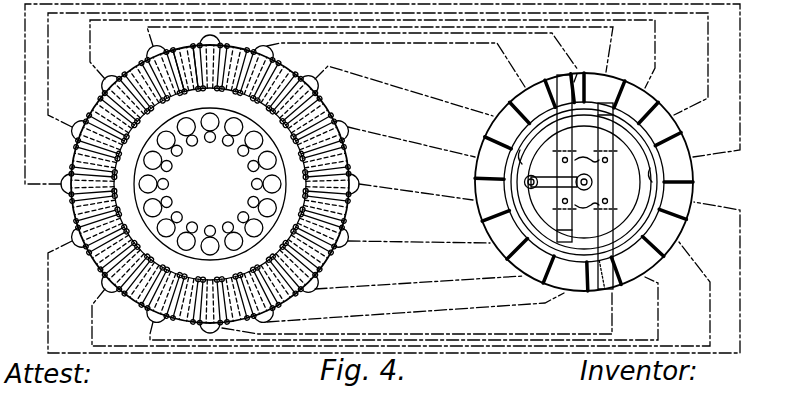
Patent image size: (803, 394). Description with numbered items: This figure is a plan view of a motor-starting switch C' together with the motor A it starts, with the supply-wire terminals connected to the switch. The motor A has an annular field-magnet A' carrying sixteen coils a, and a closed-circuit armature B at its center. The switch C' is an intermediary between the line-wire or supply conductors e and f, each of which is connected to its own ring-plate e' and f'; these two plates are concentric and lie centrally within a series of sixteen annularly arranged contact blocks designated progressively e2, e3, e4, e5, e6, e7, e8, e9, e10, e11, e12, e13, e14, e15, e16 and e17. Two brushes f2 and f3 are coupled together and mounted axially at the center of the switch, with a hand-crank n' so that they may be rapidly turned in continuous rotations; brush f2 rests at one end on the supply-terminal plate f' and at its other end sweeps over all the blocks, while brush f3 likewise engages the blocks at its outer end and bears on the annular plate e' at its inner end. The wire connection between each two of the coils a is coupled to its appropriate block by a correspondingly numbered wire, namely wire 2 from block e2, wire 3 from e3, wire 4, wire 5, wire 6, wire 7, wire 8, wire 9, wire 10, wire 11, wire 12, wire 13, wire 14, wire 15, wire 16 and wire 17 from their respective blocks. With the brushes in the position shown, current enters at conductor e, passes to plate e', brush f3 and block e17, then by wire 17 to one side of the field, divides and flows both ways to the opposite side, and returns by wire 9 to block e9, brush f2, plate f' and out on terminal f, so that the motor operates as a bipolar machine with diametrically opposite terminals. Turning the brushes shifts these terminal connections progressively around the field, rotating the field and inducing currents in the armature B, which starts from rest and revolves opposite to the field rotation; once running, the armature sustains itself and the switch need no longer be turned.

The motor A is at (199, 184).
The field-magnet A' is at (172, 69).
The coils a is at (210, 184).
The armature B is at (210, 184).
The switch C' is at (584, 182).
The supply conductor e is at (641, 182).
The ring-plate e' is at (583, 182).
The contact-block e2 is at (523, 107).
The contact-block e3 is at (498, 134).
The contact-block e4 is at (489, 166).
The contact-block e5 is at (494, 206).
The contact-block e6 is at (511, 244).
The contact-block e7 is at (539, 269).
The contact-block e8 is at (572, 276).
The contact-block e9 is at (598, 292).
The contact-block e10 is at (647, 253).
The contact-block e11 is at (672, 225).
The contact-block e12 is at (678, 195).
The contact-block e13 is at (670, 149).
The contact-block e14 is at (655, 117).
The contact-block e15 is at (630, 95).
The contact-block e16 is at (598, 87).
The contact-block e17 is at (573, 78).
The supply conductor f is at (655, 181).
The ring-plate f' is at (578, 166).
The brush f2 is at (587, 150).
The brush f3 is at (585, 217).
The hand-crank n' is at (551, 175).
The wire 2 is at (396, 65).
The wire 3 is at (404, 98).
The wire 4 is at (411, 144).
The wire 5 is at (416, 195).
The wire 6 is at (419, 234).
The wire 7 is at (419, 275).
The wire 8 is at (415, 304).
The wire 9 is at (417, 313).
The wire 10 is at (404, 309).
The wire 11 is at (401, 294).
The wire 12 is at (394, 277).
The wire 13 is at (382, 92).
The wire 14 is at (378, 68).
The wire 15 is at (372, 52).
The wire 16 is at (380, 47).
The wire 17 is at (390, 51).